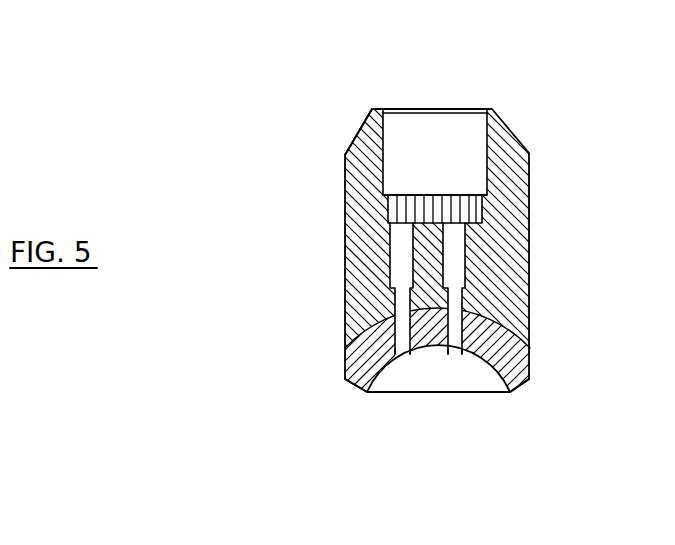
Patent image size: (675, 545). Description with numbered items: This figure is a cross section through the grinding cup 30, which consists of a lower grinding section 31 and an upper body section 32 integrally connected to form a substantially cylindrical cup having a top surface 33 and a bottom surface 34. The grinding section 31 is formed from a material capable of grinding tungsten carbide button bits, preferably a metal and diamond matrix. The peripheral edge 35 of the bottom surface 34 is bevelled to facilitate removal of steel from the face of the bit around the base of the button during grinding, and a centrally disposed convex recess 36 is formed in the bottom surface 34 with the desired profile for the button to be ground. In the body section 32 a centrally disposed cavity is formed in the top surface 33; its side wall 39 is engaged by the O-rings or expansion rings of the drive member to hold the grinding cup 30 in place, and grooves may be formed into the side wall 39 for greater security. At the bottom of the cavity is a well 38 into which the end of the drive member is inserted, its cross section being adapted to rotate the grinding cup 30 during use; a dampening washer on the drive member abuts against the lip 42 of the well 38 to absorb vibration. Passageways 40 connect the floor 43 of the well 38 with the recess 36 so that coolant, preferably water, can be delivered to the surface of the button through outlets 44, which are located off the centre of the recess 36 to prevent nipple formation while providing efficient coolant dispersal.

The grinding cup 30 is at (545, 155).
The lower grinding section 31 is at (530, 365).
The upper body section 32 is at (530, 256).
The top surface 33 is at (493, 108).
The bottom surface 34 is at (366, 391).
The peripheral edge 35 is at (518, 388).
The convex recess 36 is at (487, 380).
The well 38 is at (474, 208).
The side wall 39 is at (353, 142).
The passageways 40 is at (402, 267).
The lip 42 is at (487, 178).
The floor 43 is at (433, 222).
The outlets 44 is at (402, 352).